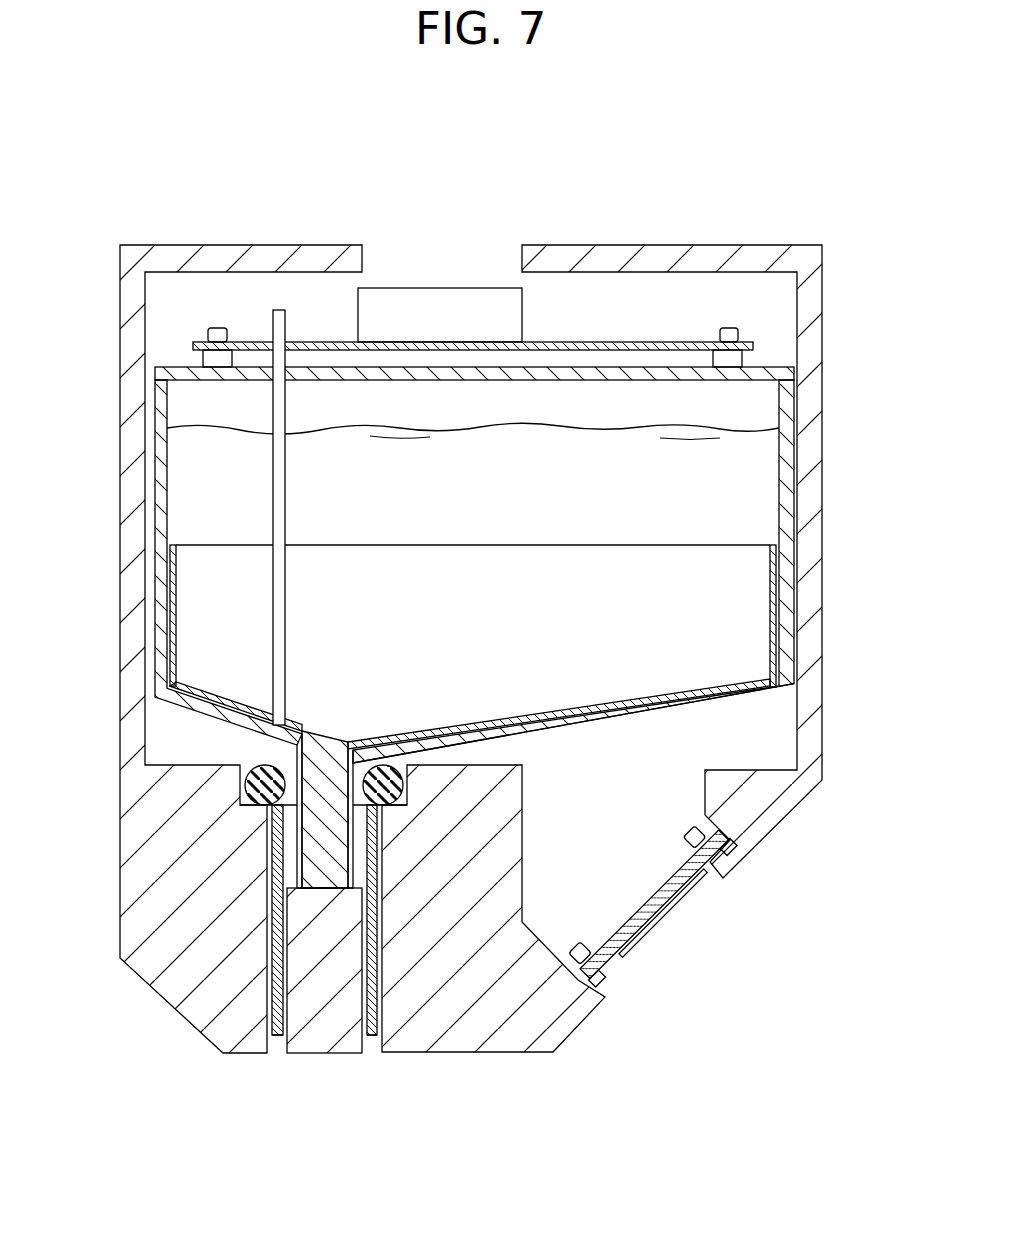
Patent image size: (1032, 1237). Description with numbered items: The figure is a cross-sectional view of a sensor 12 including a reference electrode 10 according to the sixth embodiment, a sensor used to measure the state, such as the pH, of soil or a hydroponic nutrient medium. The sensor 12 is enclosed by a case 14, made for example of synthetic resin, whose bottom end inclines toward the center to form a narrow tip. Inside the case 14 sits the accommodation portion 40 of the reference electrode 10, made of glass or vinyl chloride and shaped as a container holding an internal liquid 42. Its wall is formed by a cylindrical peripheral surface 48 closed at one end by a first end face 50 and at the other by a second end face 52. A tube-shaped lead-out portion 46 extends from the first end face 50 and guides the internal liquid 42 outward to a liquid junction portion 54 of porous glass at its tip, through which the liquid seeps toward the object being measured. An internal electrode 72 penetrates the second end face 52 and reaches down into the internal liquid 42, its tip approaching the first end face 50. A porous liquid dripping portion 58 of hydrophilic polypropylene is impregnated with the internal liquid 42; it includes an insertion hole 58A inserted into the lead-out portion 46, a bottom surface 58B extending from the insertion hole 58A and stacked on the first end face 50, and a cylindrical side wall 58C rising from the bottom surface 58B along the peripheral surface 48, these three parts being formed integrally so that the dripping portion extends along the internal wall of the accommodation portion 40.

The sensor 12 is at (631, 124).
The case 14 is at (829, 304).
The reference electrode 10 is at (562, 330).
The accommodation portion 40 is at (152, 380).
The internal liquid 42 is at (758, 500).
The peripheral surface 48 is at (168, 512).
The first end face 50 is at (770, 709).
The second end face 52 is at (777, 366).
The liquid dripping portion 58 is at (574, 544).
The insertion hole 58A is at (319, 753).
The bottom surface 58B is at (578, 700).
The side wall 58C is at (768, 598).
The internal electrode 72 is at (272, 477).
The lead-out portion 46 is at (283, 839).
The liquid junction portion 54 is at (282, 1054).